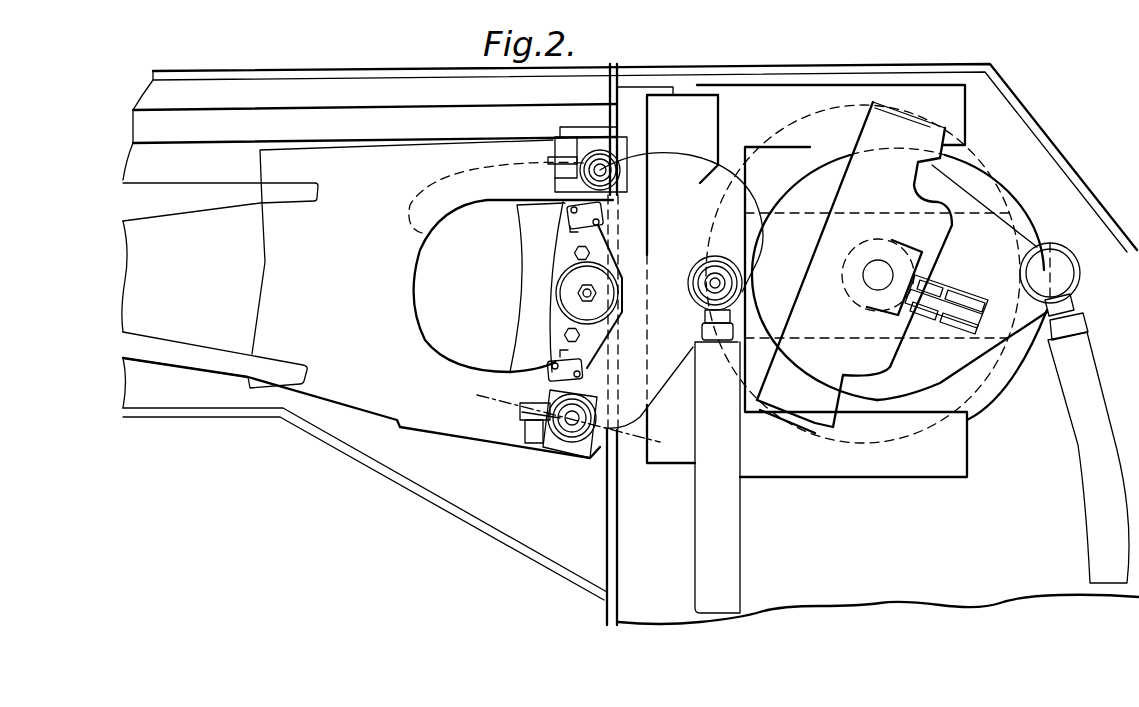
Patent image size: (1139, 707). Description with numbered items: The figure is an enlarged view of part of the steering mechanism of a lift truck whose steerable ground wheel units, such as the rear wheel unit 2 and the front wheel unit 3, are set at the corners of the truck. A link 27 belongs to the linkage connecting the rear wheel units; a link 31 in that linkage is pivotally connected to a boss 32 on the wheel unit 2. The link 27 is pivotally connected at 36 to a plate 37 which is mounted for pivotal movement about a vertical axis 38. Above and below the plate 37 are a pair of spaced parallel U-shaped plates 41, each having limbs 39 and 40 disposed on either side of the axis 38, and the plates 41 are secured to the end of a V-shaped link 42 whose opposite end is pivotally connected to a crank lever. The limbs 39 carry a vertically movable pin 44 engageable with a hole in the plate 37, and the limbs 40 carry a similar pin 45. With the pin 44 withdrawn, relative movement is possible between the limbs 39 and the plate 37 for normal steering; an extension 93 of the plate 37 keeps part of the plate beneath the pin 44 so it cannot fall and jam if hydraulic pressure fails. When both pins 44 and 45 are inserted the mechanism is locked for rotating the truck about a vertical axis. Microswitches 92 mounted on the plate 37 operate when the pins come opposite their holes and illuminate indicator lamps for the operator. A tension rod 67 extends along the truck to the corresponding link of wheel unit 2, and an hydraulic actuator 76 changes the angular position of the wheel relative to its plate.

The ground wheel unit 2 is at (1018, 213).
The ground wheel unit 3 is at (498, 382).
The link 27 is at (728, 510).
The link 31 is at (1097, 492).
The boss 32 is at (1062, 277).
The pivotal connection 36 is at (735, 282).
The plate 37 is at (672, 192).
The vertical axis 38 is at (582, 293).
The limbs 39 is at (493, 150).
The limbs 40 is at (502, 437).
The U-shaped plates 41 is at (335, 390).
The V-shaped link 42 is at (173, 343).
The pin 44 is at (607, 168).
The pin 45 is at (553, 443).
The tension rod 67 is at (196, 115).
The hydraulic actuator 76 is at (900, 138).
The microswitches 92 is at (563, 213).
The extension 93 is at (465, 180).